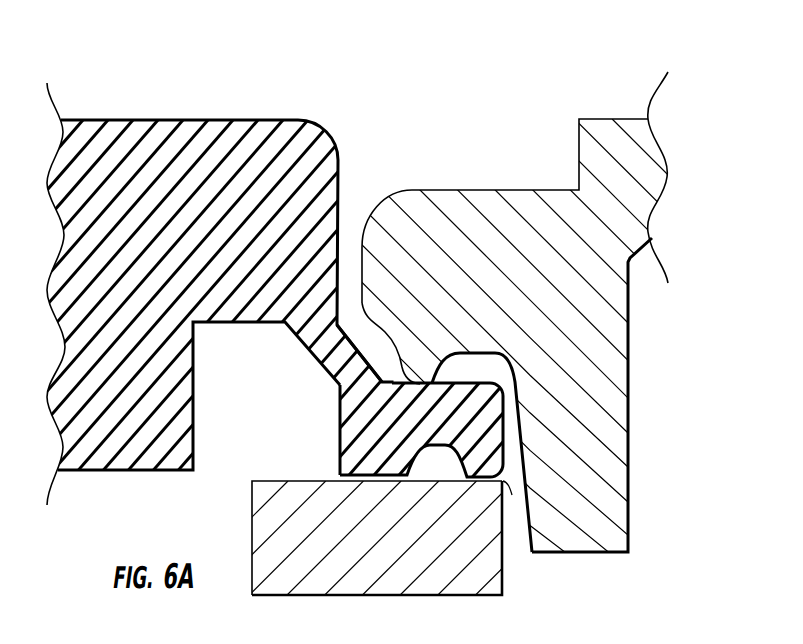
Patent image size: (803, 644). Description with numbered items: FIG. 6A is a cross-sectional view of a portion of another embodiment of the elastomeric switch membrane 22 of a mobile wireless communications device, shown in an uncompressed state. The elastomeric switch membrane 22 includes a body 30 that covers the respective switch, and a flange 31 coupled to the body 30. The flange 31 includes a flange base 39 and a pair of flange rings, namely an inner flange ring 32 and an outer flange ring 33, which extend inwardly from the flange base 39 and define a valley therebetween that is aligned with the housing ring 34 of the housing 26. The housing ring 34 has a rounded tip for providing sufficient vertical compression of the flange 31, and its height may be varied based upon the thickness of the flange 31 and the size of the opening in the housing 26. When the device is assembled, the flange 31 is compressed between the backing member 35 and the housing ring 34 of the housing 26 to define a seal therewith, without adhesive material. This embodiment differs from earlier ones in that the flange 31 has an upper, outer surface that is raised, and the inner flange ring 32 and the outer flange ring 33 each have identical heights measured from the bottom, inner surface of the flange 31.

The elastomeric switch membrane 22 is at (243, 100).
The body 30 is at (328, 130).
The flange base 39 is at (360, 397).
The flange 31 is at (364, 430).
The inner flange ring 32 is at (340, 473).
The housing 26 is at (396, 335).
The housing ring 34 is at (425, 368).
The outer flange ring 33 is at (532, 555).
The backing member 35 is at (252, 540).